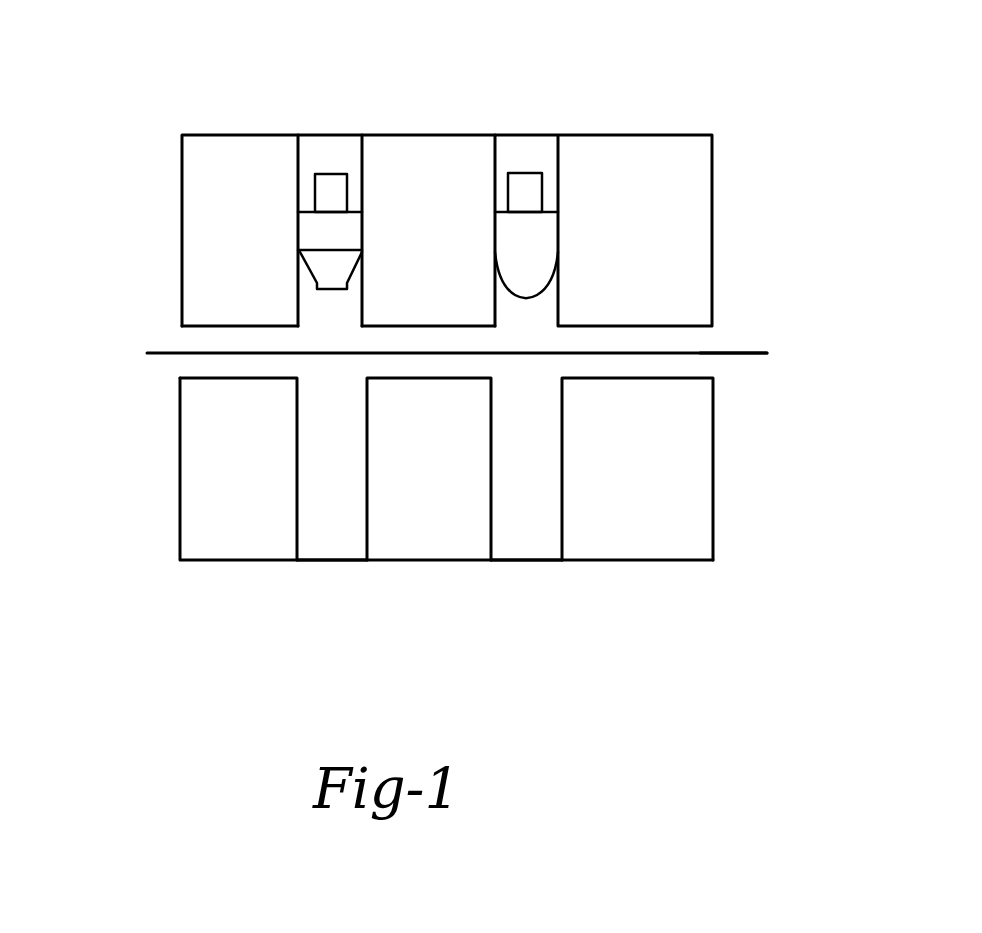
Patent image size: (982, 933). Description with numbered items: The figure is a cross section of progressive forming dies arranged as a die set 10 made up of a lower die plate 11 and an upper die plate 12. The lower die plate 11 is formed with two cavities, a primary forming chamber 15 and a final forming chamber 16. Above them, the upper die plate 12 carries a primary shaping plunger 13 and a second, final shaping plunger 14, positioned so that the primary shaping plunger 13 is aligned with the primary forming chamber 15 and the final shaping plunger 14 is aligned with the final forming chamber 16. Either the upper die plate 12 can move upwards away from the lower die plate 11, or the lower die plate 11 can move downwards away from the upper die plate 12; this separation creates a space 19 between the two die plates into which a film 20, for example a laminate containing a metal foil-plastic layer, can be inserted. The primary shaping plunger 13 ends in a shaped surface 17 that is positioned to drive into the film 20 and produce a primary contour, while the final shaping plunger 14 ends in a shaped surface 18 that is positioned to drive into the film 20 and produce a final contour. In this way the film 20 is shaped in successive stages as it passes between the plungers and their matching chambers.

The die set 10 is at (158, 418).
The lower die plate 11 is at (648, 507).
The upper die plate 12 is at (648, 183).
The primary shaping plunger 13 is at (522, 232).
The final shaping plunger 14 is at (333, 232).
The primary forming chamber 15 is at (522, 533).
The final forming chamber 16 is at (327, 530).
The shaped surface 17 is at (527, 270).
The shaped surface 18 is at (330, 270).
The space 19 is at (707, 342).
The film 20 is at (732, 358).